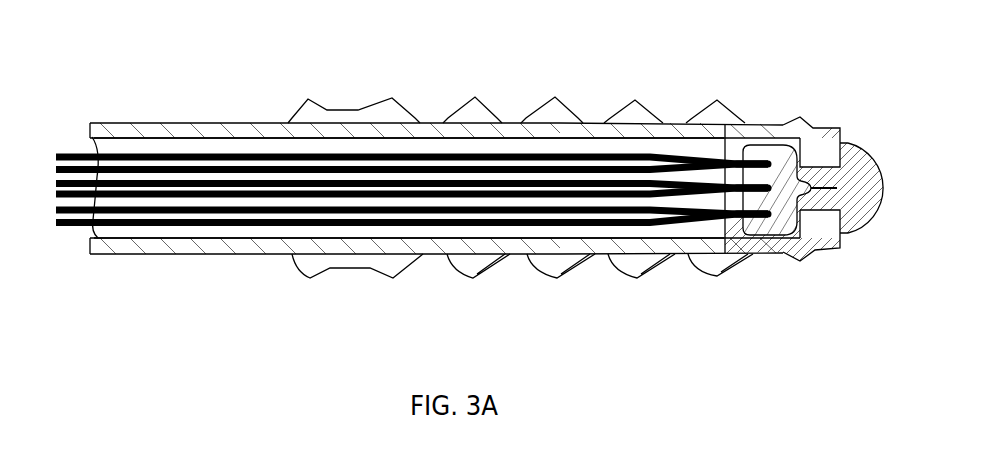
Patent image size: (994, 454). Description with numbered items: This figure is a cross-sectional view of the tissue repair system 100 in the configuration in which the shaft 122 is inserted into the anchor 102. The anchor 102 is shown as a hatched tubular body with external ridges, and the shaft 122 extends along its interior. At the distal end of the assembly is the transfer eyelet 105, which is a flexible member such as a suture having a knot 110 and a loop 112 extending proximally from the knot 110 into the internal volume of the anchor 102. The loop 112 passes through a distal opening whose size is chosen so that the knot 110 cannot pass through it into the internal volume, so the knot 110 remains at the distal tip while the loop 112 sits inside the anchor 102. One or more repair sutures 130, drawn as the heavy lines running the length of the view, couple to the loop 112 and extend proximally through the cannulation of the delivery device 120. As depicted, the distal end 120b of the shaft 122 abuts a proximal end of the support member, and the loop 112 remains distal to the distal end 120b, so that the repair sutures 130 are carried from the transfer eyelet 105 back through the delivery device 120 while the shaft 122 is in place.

The tissue repair system 100 is at (107, 70).
The delivery device 120 is at (232, 133).
The distal end 120b is at (593, 130).
The anchor 102 is at (360, 113).
The shaft 122 is at (193, 243).
The repair sutures 130 is at (368, 228).
The transfer eyelet 105 is at (817, 198).
The knot 110 is at (855, 168).
The loop 112 is at (770, 230).